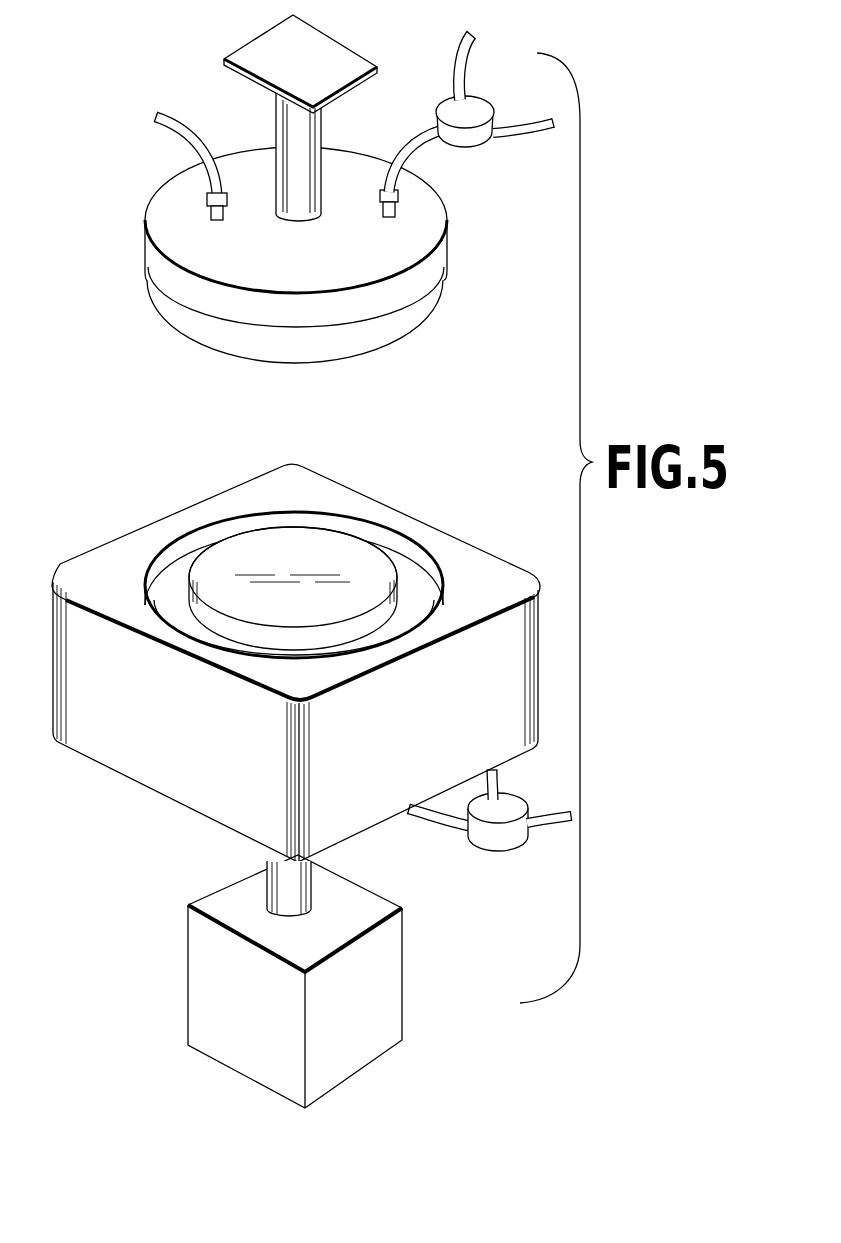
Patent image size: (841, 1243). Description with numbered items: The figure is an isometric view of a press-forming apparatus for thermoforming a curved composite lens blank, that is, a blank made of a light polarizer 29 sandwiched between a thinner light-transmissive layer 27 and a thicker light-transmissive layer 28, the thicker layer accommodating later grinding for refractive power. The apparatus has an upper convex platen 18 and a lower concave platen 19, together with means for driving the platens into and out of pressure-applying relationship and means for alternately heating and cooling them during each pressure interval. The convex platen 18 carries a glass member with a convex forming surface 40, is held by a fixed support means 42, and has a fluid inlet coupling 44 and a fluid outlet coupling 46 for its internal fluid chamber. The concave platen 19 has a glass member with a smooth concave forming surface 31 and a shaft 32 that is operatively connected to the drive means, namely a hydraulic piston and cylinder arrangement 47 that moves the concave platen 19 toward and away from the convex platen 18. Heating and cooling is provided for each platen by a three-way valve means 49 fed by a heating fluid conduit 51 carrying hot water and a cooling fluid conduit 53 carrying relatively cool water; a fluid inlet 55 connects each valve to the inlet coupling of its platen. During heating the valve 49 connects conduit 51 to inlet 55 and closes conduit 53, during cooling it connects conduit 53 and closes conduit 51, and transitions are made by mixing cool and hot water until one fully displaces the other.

The convex platen 18 is at (138, 256).
The concave platen 19 is at (71, 758).
The light-transmissive layer 27 is at (151, 607).
The light-transmissive layer 28 is at (158, 552).
The light polarizer 29 is at (150, 583).
The concave forming surface 31 is at (258, 523).
The shaft 32 is at (294, 884).
The convex forming surface 40 is at (186, 334).
The fixed support means 42 is at (322, 118).
The fluid inlet coupling 44 is at (398, 214).
The fluid outlet coupling 46 is at (207, 210).
The hydraulic piston and cylinder arrangement 47 is at (398, 948).
The three-way valve means 49 is at (480, 127).
The heating fluid conduit 51 is at (452, 68).
The cooling fluid conduit 53 is at (515, 121).
The fluid inlet 55 is at (437, 136).